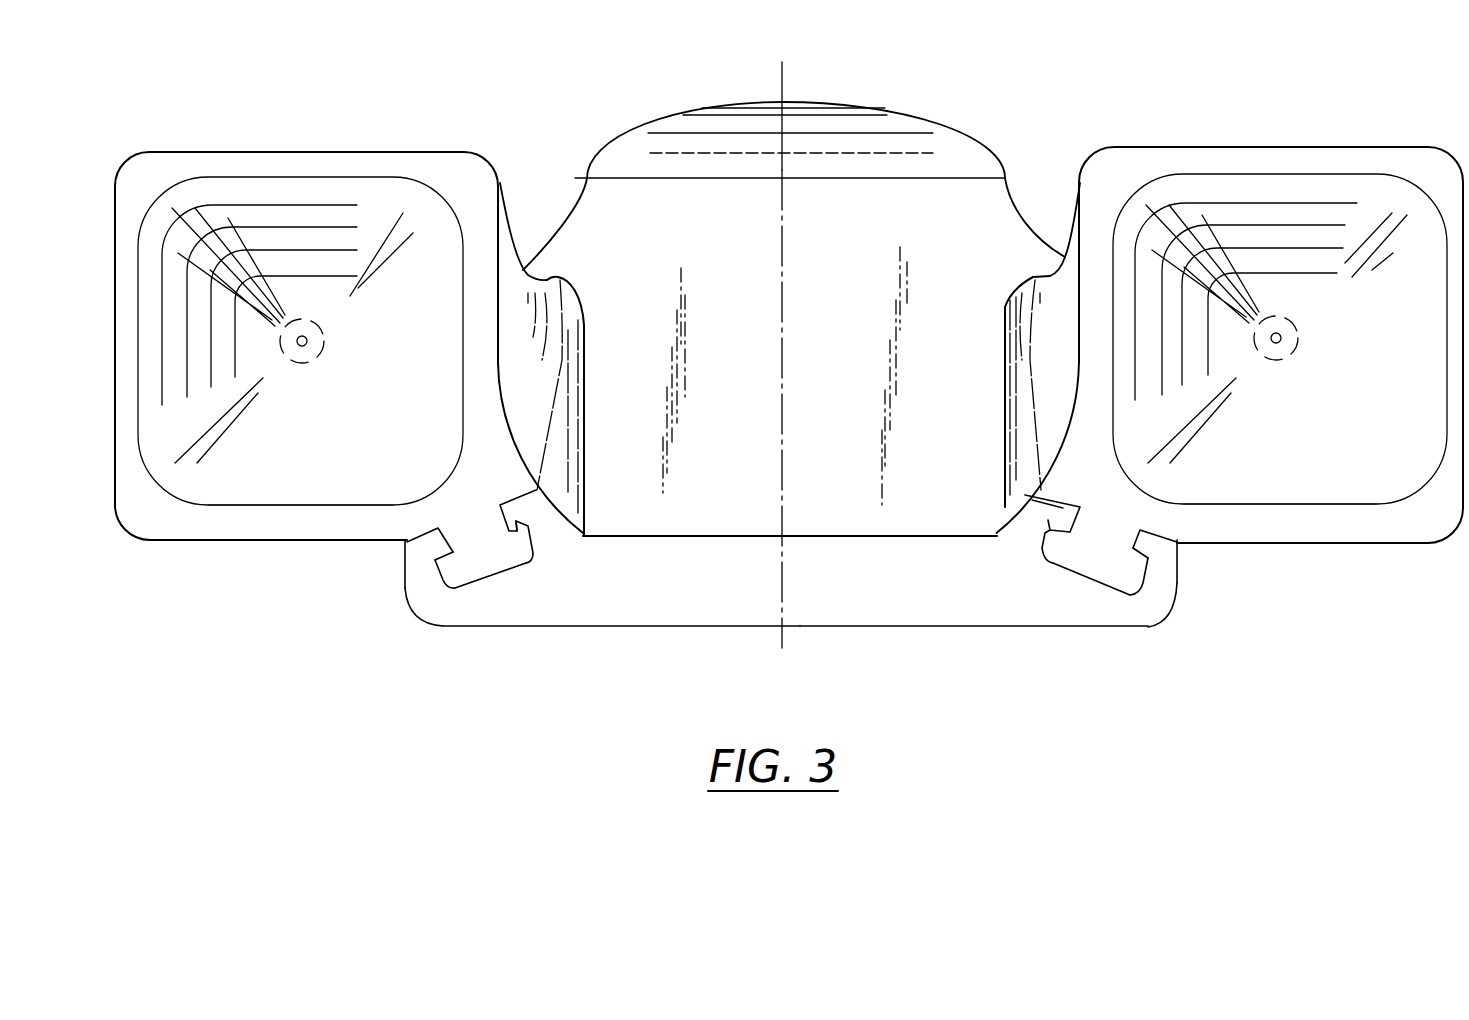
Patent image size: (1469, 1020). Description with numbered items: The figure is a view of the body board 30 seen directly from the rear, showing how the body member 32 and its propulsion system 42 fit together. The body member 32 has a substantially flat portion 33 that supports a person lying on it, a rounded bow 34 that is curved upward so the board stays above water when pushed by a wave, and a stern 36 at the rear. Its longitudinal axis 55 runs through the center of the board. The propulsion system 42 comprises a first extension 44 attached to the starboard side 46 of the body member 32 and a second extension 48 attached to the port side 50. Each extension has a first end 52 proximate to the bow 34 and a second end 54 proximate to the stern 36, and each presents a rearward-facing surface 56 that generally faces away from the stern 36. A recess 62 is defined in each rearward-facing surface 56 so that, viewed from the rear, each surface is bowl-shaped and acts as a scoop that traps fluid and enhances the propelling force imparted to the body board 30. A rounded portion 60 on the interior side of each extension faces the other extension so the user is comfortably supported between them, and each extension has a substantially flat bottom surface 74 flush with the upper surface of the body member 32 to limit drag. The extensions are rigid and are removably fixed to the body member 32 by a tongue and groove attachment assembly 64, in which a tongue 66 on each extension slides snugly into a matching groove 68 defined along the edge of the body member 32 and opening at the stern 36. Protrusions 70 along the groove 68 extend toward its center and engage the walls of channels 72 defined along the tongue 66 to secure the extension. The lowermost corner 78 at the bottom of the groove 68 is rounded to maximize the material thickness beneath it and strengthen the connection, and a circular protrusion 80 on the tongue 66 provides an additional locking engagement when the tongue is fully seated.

The body board 30 is at (1001, 68).
The body member 32 is at (850, 328).
The substantially flat portion 33 is at (580, 200).
The bow 34 is at (841, 122).
The stern 36 is at (902, 628).
The propulsion system 42 is at (447, 110).
The first extension 44 is at (1265, 147).
The starboard side 46 is at (1018, 193).
The second extension 48 is at (265, 153).
The port side 50 is at (549, 240).
The first end 52 is at (552, 278).
The second end 54 is at (427, 151).
The longitudinal axis 55 is at (777, 89).
The rearward-facing surface 56 is at (350, 216).
The rounded portion 60 is at (533, 422).
The recess 62 is at (218, 505).
The tongue and groove attachment assembly 64 is at (408, 602).
The tongue 66 is at (437, 570).
The groove 68 is at (472, 580).
The protrusion 70 is at (430, 545).
The channel 72 is at (1020, 522).
The substantially flat bottom surface 74 is at (248, 541).
The lowermost corner 78 is at (440, 588).
The circular protrusion 80 is at (585, 628).